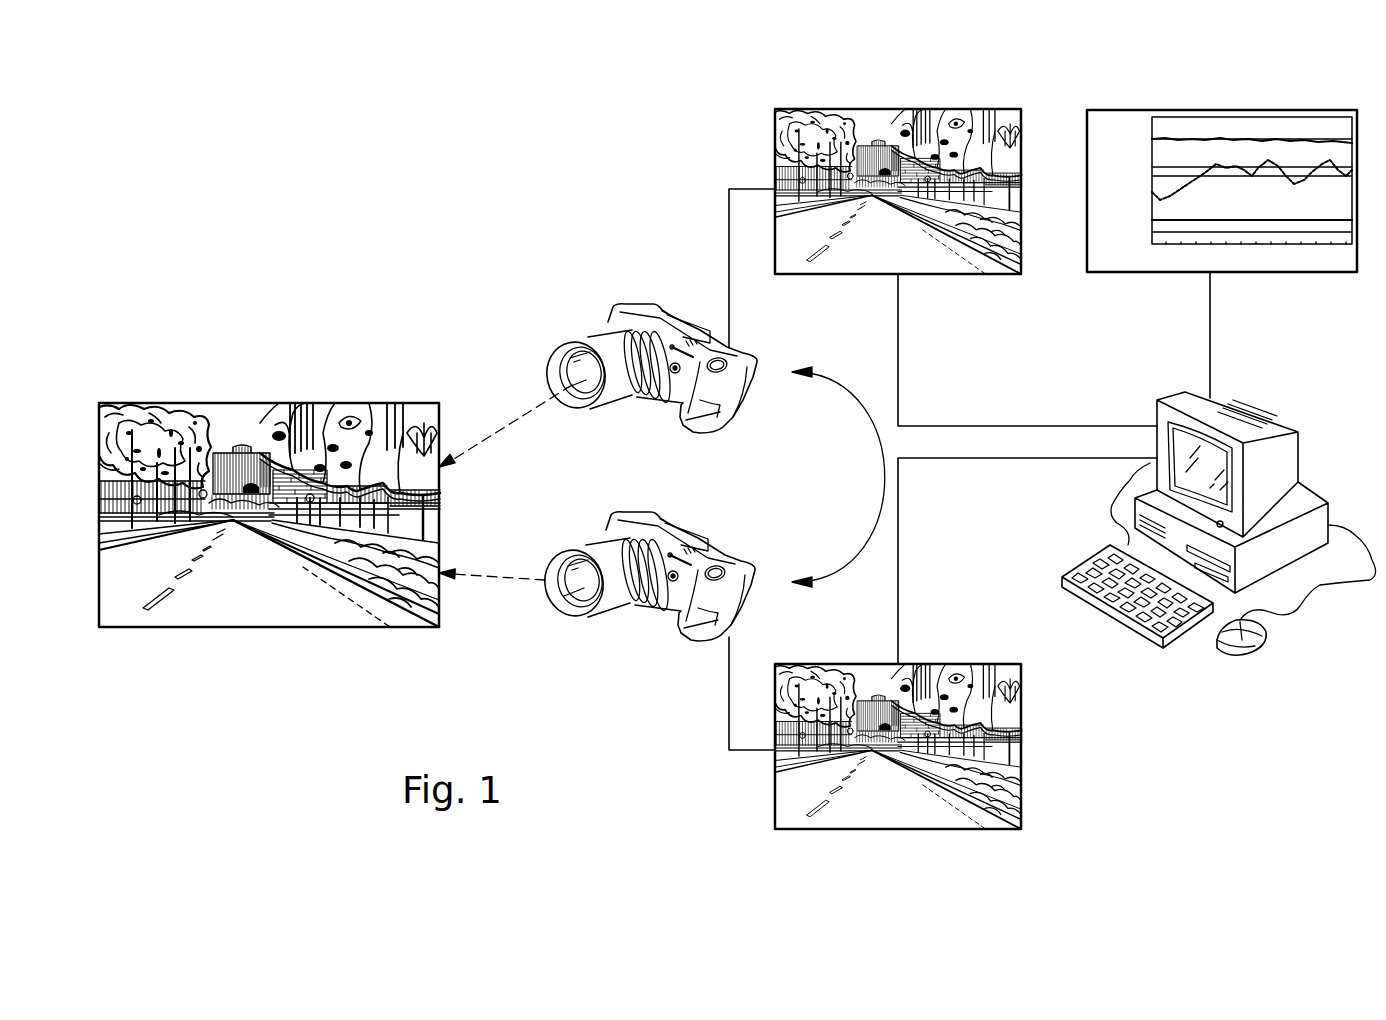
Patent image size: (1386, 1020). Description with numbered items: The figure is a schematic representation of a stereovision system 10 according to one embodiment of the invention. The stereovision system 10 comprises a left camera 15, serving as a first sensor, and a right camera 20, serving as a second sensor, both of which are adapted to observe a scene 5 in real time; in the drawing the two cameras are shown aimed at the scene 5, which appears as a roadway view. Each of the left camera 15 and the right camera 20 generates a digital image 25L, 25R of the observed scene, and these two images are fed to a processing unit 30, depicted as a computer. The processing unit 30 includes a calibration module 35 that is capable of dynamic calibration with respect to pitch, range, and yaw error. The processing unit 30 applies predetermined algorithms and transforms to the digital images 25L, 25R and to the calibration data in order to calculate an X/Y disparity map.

The scene 5 is at (231, 428).
The stereovision system 10 is at (838, 477).
The left camera 15 is at (679, 606).
The right camera 20 is at (620, 303).
The digital image 25L is at (923, 812).
The digital image 25R is at (875, 127).
The processing unit 30 is at (1177, 553).
The calibration module 35 is at (1232, 145).